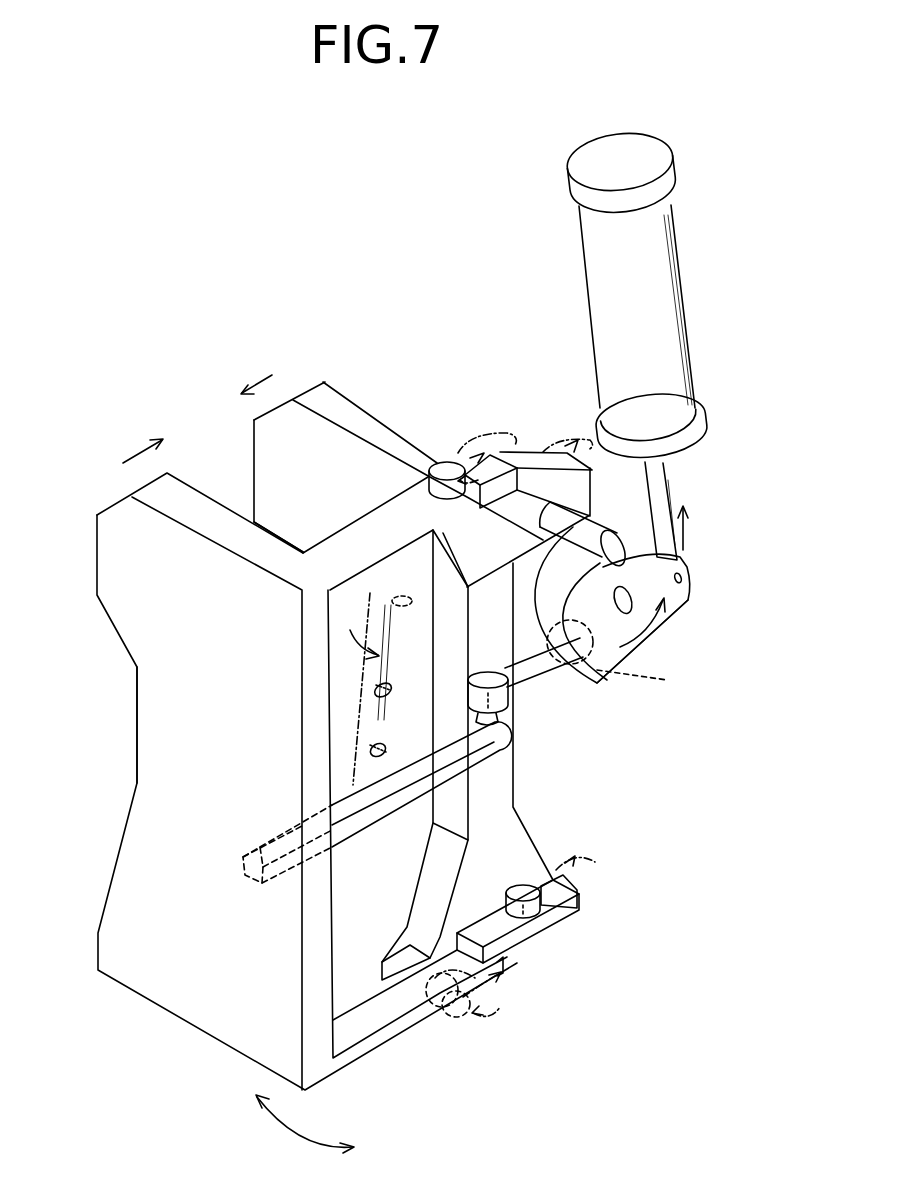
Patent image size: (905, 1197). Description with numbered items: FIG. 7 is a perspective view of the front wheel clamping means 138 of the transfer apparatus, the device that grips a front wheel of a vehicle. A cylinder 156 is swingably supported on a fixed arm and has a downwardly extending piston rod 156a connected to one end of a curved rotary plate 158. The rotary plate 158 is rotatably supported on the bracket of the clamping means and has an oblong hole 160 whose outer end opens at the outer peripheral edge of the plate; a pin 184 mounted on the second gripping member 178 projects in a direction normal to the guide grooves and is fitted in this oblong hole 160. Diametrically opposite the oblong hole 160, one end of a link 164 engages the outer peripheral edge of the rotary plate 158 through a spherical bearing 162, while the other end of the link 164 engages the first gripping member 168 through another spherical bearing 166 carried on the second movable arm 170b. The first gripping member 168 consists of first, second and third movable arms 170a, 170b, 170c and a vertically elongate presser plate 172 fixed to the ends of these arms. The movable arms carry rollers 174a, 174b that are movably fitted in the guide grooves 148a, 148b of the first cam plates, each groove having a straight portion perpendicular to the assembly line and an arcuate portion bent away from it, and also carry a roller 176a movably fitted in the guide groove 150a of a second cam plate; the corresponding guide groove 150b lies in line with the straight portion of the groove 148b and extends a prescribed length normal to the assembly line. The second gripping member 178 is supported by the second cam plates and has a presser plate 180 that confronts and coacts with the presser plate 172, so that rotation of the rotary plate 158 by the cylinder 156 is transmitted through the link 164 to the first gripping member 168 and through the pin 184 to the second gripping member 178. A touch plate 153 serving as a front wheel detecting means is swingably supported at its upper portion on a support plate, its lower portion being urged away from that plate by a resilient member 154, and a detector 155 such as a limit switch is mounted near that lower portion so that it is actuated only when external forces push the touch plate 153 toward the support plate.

The front wheel clamping means 138 is at (333, 248).
The guide groove 148a is at (487, 430).
The guide groove 148b is at (505, 1003).
The guide groove 150a is at (565, 437).
The guide groove 150b is at (592, 863).
The touch plate 153 is at (396, 708).
The resilient member 154 is at (388, 656).
The detector 155 is at (387, 750).
The cylinder 156 is at (680, 315).
The piston rod 156a is at (668, 490).
The rotary plate 158 is at (657, 647).
The oblong hole 160 is at (660, 565).
The spherical bearing 162 is at (624, 664).
The link 164 is at (555, 692).
The spherical bearing 166 is at (508, 703).
The first gripping member 168 is at (182, 1000).
The first movable arm 170a is at (308, 557).
The second movable arm 170b is at (365, 813).
The third movable arm 170c is at (367, 1030).
The presser plate 172 is at (148, 748).
The roller 174a is at (446, 460).
The roller 174b is at (450, 1017).
The roller 176a is at (577, 903).
The second gripping member 178 is at (365, 400).
The presser plate 180 is at (258, 450).
The pin 184 is at (567, 525).